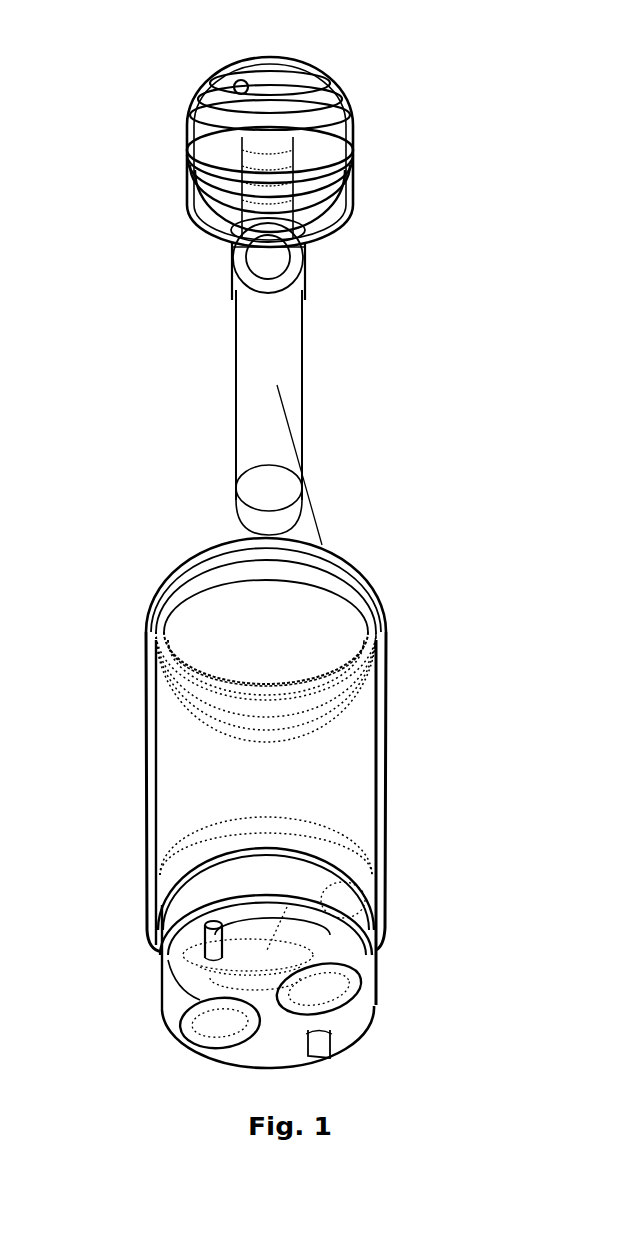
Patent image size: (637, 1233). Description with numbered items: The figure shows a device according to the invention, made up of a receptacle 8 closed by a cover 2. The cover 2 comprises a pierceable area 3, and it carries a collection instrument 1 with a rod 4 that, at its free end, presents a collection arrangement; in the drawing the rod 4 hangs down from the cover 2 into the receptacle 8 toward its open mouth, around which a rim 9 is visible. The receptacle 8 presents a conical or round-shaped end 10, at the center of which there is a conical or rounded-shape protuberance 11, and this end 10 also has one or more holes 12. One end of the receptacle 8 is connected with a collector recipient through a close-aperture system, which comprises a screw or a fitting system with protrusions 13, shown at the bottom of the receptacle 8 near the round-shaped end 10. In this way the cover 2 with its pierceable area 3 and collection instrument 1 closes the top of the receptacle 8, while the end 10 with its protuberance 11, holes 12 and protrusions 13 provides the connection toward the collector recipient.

The collection instrument 1 is at (353, 77).
The cover 2 is at (186, 85).
The pierceable area 3 is at (234, 82).
The rod 4 is at (187, 227).
The receptacle 8 is at (115, 512).
The rim 9 is at (336, 578).
The conical or round-shaped end 10 is at (353, 902).
The conical or rounded-shape protuberance 11 is at (228, 956).
The holes 12 is at (320, 1001).
The protrusions 13 is at (280, 903).